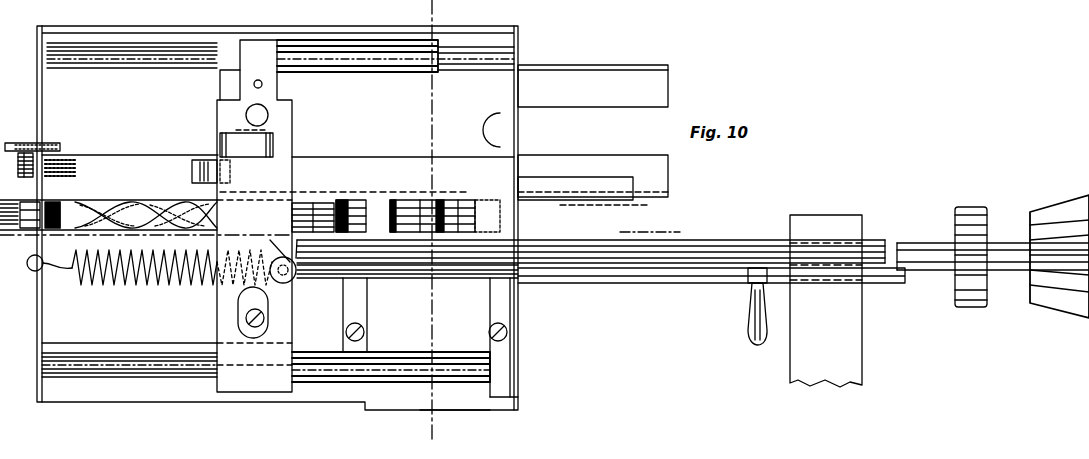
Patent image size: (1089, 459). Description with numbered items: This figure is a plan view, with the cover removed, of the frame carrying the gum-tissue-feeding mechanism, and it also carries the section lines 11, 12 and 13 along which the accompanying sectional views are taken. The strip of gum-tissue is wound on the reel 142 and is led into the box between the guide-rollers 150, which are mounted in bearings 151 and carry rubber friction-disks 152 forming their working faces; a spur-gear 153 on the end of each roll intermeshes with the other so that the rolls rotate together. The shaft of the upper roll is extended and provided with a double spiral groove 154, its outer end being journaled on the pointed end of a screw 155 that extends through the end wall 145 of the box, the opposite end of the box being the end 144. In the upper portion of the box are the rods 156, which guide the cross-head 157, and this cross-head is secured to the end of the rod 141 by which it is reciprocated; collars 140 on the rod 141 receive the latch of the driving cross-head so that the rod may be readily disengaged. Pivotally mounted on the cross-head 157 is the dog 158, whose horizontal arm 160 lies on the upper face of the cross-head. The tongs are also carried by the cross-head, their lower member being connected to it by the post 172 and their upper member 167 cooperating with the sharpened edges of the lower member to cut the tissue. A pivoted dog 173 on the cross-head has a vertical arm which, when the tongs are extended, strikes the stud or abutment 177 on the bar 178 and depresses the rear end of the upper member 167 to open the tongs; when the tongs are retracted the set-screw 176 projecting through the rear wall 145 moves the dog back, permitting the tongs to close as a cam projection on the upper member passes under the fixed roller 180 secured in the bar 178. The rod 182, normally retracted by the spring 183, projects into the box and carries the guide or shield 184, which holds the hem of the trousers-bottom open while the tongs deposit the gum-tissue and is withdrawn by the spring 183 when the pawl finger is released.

The section line 11 11 is at (657, 221).
The section line 12 12 is at (426, 224).
The section line 13 13 is at (618, 205).
The collars 140 is at (1022, 250).
The rod 141 is at (737, 238).
The reel 142 is at (826, 301).
The end of box 144 is at (512, 130).
The end wall of box 145 is at (40, 186).
The guide-rollers 150 is at (425, 228).
The bearings 151 is at (352, 297).
The friction-disks 152 is at (460, 220).
The spur-gear 153 is at (349, 200).
The double spiral groove 154 is at (145, 217).
The screw 155 is at (56, 214).
The rods 156 is at (125, 68).
The cross-head 157 is at (230, 300).
The dog 158 is at (300, 205).
The horizontal arm 160 is at (268, 215).
The upper member 167 is at (277, 218).
The post 172 is at (258, 115).
The pivoted dog 173 is at (224, 140).
The set-screw 176 is at (18, 145).
The stud or abutment 177 is at (270, 122).
The bar 178 is at (106, 172).
The fixed abutment or roller 180 is at (208, 162).
The rod 182 is at (670, 284).
The spring 183 is at (147, 282).
The guide or shield 184 is at (595, 195).